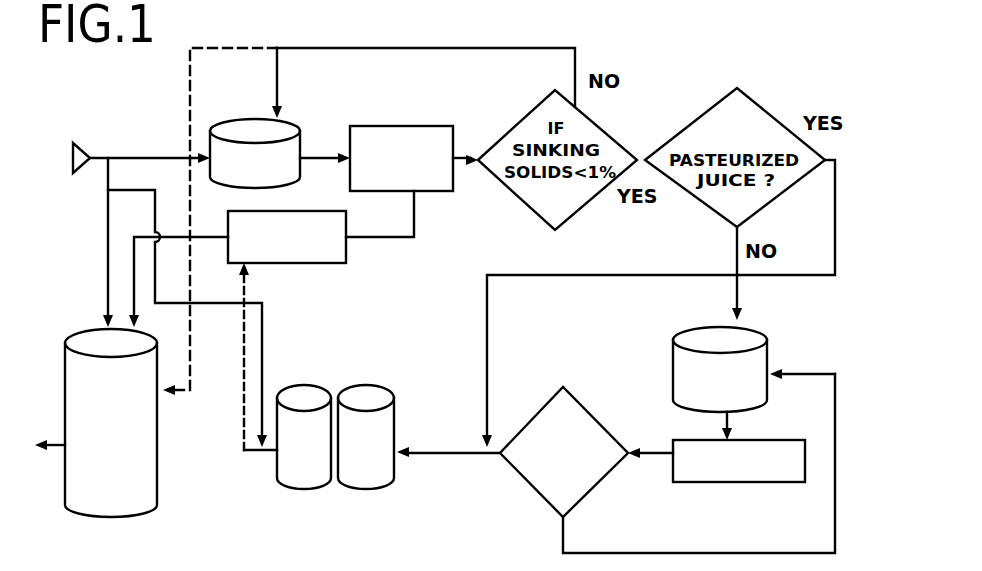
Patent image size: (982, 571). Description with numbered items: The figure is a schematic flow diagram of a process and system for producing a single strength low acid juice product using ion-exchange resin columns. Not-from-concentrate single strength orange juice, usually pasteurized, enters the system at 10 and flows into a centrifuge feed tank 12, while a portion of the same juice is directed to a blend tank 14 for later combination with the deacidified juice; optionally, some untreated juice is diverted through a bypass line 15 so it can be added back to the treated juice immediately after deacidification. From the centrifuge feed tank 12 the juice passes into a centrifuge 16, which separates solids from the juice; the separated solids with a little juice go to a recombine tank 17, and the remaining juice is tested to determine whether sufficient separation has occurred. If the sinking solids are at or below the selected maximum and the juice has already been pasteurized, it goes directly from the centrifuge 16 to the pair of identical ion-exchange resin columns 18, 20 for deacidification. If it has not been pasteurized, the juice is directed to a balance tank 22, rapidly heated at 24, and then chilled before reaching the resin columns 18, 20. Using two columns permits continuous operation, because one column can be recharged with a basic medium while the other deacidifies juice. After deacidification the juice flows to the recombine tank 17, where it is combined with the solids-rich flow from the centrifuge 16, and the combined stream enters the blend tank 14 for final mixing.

The juice entry point 10 is at (73, 158).
The centrifuge feed tank 12 is at (293, 124).
The blend tank 14 is at (63, 380).
The bypass line 15 is at (262, 330).
The centrifuge 16 is at (456, 126).
The recombine tank 17 is at (346, 250).
The ion-exchange resin column 18 is at (300, 489).
The ion-exchange resin column 20 is at (370, 489).
The balance tank 22 is at (770, 347).
The heating stage 24 is at (730, 483).